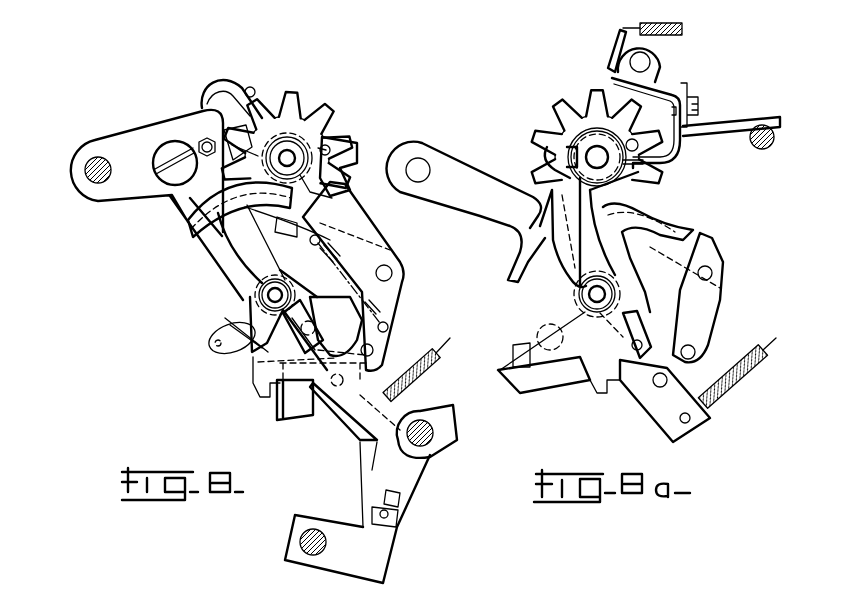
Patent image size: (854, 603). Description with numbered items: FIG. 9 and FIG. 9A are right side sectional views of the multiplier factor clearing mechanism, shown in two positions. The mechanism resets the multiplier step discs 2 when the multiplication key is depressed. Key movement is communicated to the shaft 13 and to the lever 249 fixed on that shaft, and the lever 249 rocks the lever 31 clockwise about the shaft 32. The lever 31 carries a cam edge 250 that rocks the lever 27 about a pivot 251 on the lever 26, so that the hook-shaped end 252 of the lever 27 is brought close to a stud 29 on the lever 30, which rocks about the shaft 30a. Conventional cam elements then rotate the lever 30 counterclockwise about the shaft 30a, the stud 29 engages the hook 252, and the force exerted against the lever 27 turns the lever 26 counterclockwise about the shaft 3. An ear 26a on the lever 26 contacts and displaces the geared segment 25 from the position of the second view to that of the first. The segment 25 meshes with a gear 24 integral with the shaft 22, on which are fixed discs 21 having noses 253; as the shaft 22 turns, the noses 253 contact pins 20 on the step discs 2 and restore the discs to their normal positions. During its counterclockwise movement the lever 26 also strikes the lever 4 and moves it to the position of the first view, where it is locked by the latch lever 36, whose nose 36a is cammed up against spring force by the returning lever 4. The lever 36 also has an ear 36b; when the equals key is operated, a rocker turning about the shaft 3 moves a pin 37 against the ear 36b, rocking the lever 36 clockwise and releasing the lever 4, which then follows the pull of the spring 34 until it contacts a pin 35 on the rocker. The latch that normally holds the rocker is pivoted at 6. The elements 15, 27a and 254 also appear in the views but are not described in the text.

In FIG. 9, the step discs 2 is at (327, 151).
In FIG. 9, the shaft 3 is at (266, 296).
In FIG. 9, the lever 4 is at (293, 412).
In FIG. 9A, the lever 4 is at (542, 380).
In FIG. 9A, the pivot 6 is at (654, 385).
In FIG. 9, the shaft 13 is at (312, 530).
In FIG. 9A, the arm 15 is at (463, 167).
In FIG. 9, the pins 20 is at (350, 166).
In FIG. 9, the discs 21 is at (325, 155).
In FIG. 9, the shaft 22 is at (291, 155).
In FIG. 9, the gear 24 is at (283, 150).
In FIG. 9, the geared segment 25 is at (232, 268).
In FIG. 9A, the geared segment 25 is at (586, 221).
In FIG. 9, the lever 26 is at (332, 283).
In FIG. 9A, the lever 26 is at (663, 282).
In FIG. 9, the ear 26a is at (230, 240).
In FIG. 9A, the ear 26a is at (624, 237).
In FIG. 9, the lever 27 is at (390, 307).
In FIG. 9, the pin 27a is at (373, 351).
In FIG. 9, the stud 29 is at (206, 145).
In FIG. 9, the lever 30 is at (133, 185).
In FIG. 9, the shaft 30a is at (84, 163).
In FIG. 9, the lever 31 is at (378, 478).
In FIG. 9, the shaft 32 is at (423, 444).
In FIG. 9A, the spring 34 is at (580, 323).
In FIG. 9, the pin 35 is at (212, 343).
In FIG. 9A, the pin 35 is at (540, 340).
In FIG. 9, the latch lever 36 is at (343, 419).
In FIG. 9A, the latch lever 36 is at (666, 412).
In FIG. 9, the nose 36a is at (260, 370).
In FIG. 9, the ear 36b is at (312, 322).
In FIG. 9, the pin 37 is at (275, 380).
In FIG. 9, the lever 249 is at (378, 558).
In FIG. 9, the cam edge 250 is at (414, 378).
In FIG. 9, the pivot 251 is at (392, 272).
In FIG. 9, the hook-shaped end 252 is at (218, 86).
In FIG. 9, the noses 253 is at (330, 150).
In FIG. 9, the lever 254 is at (227, 326).